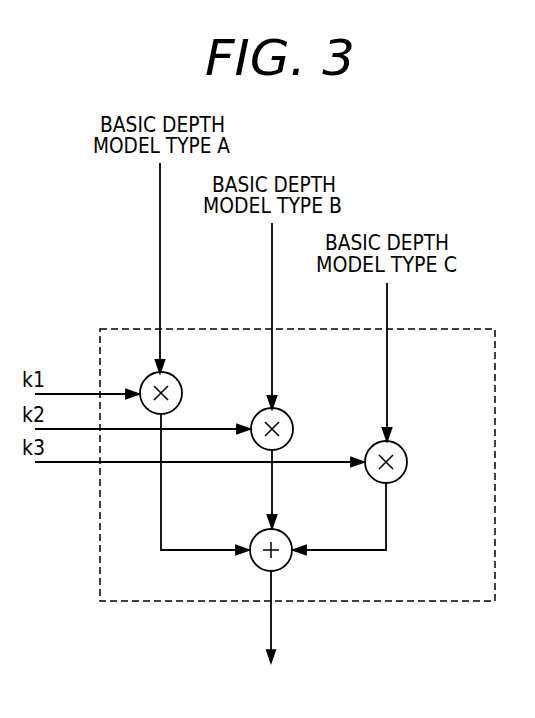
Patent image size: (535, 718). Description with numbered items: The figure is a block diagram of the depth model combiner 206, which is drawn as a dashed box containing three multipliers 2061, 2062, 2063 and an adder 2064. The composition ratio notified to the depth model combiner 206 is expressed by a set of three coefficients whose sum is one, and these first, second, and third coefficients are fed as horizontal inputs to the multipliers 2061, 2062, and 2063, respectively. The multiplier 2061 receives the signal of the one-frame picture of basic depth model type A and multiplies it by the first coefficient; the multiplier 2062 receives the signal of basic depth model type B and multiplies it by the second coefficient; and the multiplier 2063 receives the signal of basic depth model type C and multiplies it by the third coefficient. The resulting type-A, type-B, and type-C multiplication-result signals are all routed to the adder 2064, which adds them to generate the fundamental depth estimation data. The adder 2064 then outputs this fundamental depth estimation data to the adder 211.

The depth model combiner 206 is at (122, 329).
The multiplier 2061 is at (176, 377).
The multiplier 2062 is at (287, 413).
The multiplier 2063 is at (401, 446).
The adder 2064 is at (287, 537).
The adder 211 is at (270, 635).